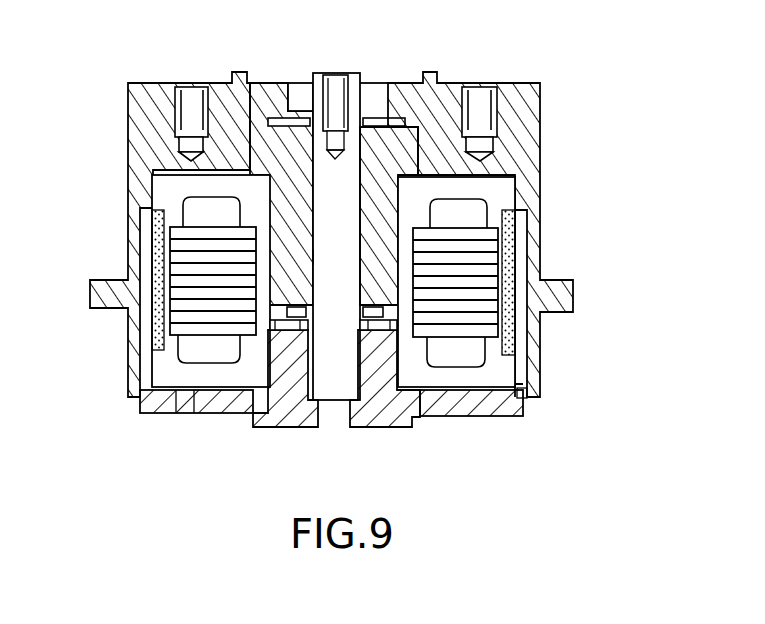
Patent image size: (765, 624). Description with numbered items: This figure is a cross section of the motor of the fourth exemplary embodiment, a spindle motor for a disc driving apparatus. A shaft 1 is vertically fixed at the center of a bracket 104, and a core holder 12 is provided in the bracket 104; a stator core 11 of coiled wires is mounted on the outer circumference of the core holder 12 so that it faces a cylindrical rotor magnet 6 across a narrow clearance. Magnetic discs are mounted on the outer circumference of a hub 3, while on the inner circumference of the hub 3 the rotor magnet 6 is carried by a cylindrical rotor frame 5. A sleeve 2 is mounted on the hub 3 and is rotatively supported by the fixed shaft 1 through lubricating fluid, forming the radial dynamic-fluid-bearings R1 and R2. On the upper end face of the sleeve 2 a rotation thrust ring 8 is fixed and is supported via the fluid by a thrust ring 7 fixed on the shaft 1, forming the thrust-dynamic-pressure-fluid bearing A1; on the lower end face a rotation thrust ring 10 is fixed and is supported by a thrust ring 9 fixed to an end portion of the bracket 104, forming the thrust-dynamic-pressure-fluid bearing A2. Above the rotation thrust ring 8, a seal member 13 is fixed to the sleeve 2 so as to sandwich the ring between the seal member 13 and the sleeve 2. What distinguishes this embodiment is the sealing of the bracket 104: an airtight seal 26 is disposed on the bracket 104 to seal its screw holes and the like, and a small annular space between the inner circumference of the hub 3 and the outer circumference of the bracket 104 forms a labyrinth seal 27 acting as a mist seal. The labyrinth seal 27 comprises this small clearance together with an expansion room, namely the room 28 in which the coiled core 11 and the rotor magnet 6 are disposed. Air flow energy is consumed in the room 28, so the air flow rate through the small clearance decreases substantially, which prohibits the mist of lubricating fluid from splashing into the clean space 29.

The shaft 1 is at (352, 80).
The sleeve 2 is at (420, 113).
The hub 3 is at (520, 93).
The rotor frame 5 is at (520, 225).
The rotor magnet 6 is at (513, 268).
The thrust ring 7 is at (303, 90).
The rotation thrust ring 8 is at (377, 117).
The thrust ring 9 is at (380, 395).
The rotation thrust ring 10 is at (293, 322).
The stator core 11 is at (467, 308).
The core holder 12 is at (250, 367).
The seal member 13 is at (285, 100).
The airtight seal 26 is at (518, 397).
The labyrinth seal 27 is at (523, 393).
The room 28 is at (162, 362).
The clean space 29 is at (600, 70).
The bracket 104 is at (441, 405).
The thrust-dynamic-pressure-fluid bearing A1 is at (287, 102).
The thrust-dynamic-pressure-fluid bearing A2 is at (298, 322).
The radial dynamic-fluid-bearing R1 is at (290, 157).
The radial dynamic-fluid-bearing R2 is at (310, 258).